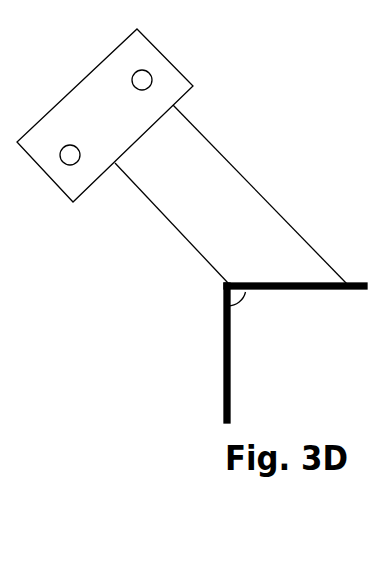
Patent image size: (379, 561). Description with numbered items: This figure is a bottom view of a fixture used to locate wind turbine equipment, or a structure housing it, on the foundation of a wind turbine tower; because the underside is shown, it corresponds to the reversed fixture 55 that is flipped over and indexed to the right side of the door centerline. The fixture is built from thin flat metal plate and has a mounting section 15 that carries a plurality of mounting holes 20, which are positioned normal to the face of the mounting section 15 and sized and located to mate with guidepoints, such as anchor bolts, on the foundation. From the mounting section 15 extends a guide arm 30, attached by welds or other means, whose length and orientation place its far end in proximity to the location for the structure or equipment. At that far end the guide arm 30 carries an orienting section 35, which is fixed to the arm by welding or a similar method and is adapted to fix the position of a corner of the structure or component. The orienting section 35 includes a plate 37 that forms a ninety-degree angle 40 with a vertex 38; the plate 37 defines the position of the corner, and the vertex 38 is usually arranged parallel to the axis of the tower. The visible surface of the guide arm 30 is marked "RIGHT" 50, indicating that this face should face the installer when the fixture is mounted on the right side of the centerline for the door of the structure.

The mounting section 15 is at (158, 50).
The mounting holes 20 is at (134, 73).
The guide arm 30 is at (212, 143).
The orienting section 35 is at (204, 320).
The plate 37 is at (223, 397).
The vertex 38 is at (224, 284).
The 90-degree angle 40 is at (252, 322).
The "RIGHT" marking 50 is at (238, 223).
The reversed fixture 55 is at (331, 147).